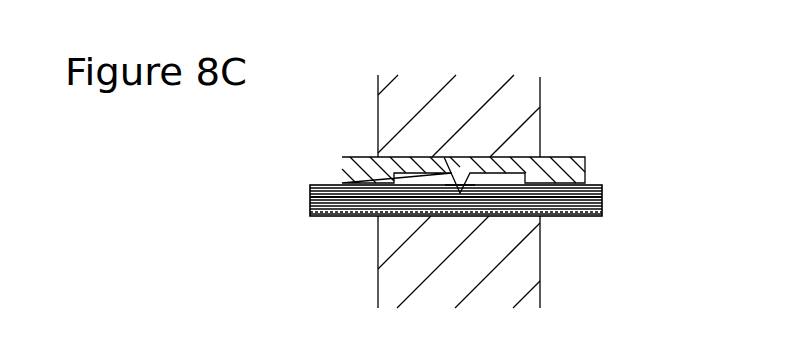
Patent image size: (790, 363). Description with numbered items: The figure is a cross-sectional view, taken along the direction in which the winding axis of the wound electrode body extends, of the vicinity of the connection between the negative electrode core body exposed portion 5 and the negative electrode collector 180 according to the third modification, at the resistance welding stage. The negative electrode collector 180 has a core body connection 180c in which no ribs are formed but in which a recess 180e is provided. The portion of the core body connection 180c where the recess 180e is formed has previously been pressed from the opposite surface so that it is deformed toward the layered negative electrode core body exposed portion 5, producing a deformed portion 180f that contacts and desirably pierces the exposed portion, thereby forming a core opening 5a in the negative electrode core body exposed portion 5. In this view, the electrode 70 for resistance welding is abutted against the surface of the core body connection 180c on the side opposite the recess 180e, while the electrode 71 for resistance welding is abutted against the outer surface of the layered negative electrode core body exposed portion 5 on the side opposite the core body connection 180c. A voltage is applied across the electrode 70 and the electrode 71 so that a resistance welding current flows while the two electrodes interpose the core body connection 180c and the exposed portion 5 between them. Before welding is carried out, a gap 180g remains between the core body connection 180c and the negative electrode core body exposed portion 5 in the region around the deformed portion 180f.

The negative electrode core body exposed portion 5 is at (428, 215).
The core opening 5a is at (470, 177).
The electrode for resistance welding 70 is at (522, 98).
The electrode for resistance welding 71 is at (515, 283).
The negative electrode collector 180 is at (498, 99).
The core body connection 180c is at (368, 167).
The recess 180e is at (447, 163).
The deformed portion 180f is at (478, 157).
The gap 180g is at (407, 175).